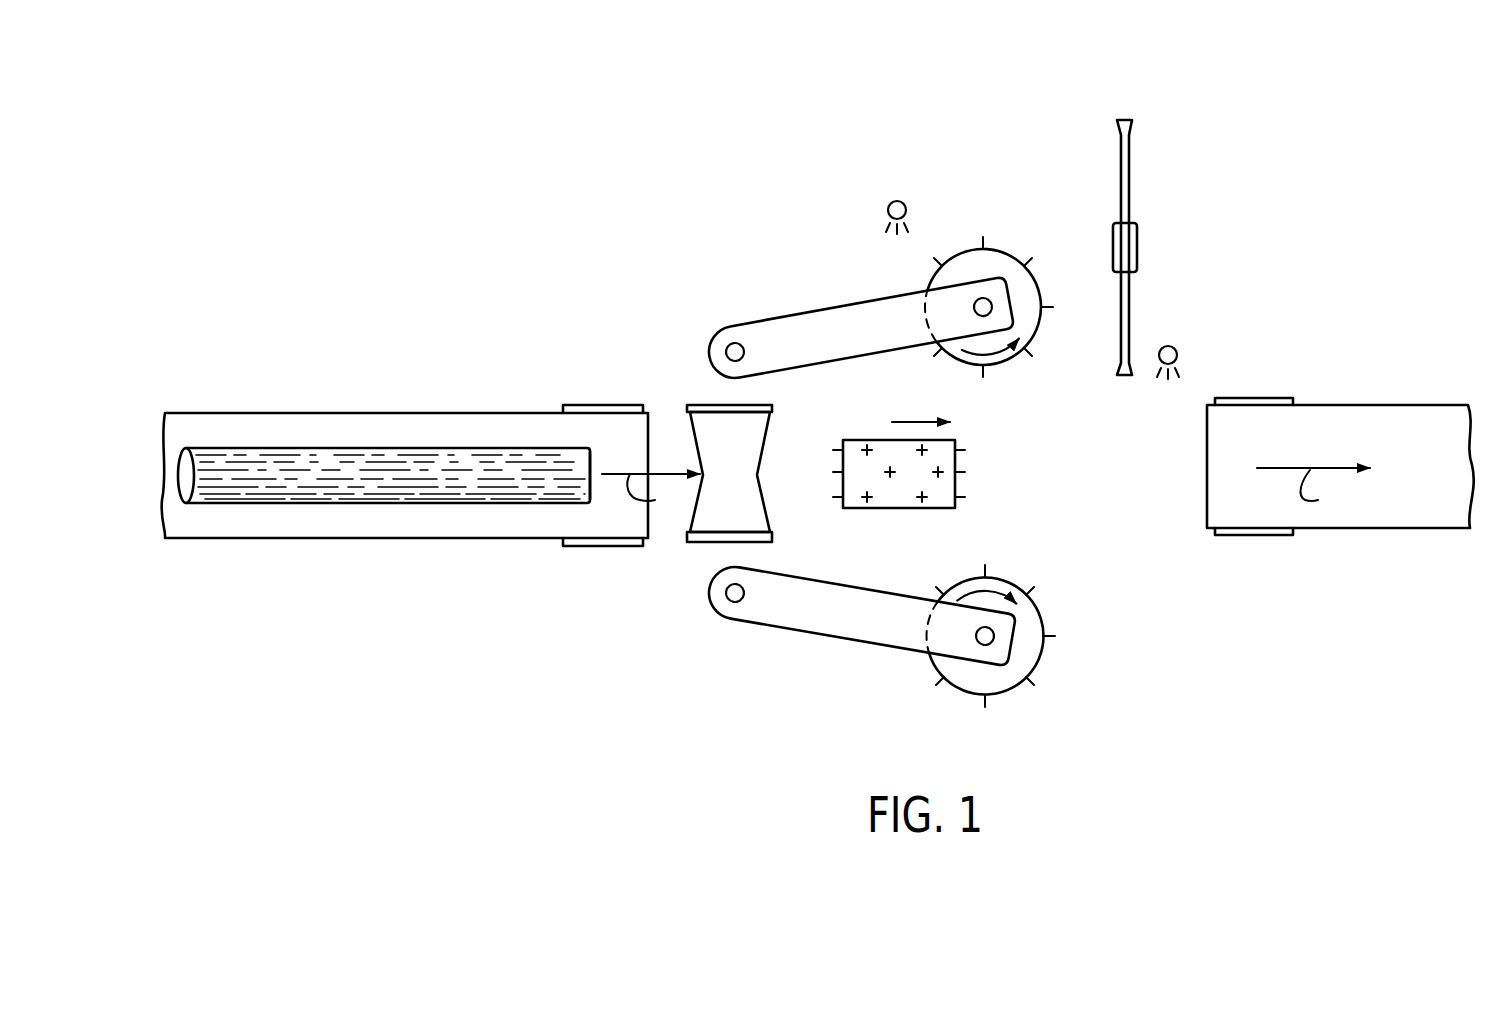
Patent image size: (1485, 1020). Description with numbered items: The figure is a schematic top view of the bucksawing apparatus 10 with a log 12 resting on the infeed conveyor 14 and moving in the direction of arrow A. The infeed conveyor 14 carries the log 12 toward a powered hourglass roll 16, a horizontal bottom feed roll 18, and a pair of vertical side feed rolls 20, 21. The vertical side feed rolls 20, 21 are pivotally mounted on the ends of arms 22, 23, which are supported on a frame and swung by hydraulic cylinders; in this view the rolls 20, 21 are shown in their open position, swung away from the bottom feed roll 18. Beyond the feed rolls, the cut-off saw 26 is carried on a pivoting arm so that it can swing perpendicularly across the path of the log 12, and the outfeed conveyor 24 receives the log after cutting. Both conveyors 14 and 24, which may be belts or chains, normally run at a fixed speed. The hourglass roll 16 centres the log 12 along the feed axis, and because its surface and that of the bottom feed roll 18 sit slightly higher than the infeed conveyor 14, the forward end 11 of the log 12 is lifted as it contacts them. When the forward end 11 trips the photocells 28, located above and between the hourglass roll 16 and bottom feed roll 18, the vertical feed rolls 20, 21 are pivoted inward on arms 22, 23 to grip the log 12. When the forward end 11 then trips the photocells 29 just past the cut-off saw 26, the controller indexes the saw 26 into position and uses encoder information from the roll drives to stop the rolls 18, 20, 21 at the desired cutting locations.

The bucksawing apparatus 10 is at (594, 190).
The forward end of log 11 is at (590, 466).
The log 12 is at (363, 447).
The infeed conveyor 14 is at (472, 412).
The powered hourglass roll 16 is at (697, 545).
The horizontal bottom feed roll 18 is at (905, 507).
The vertical side feed roll 20 is at (1005, 246).
The vertical side feed roll 21 is at (1047, 622).
The arm 22 is at (833, 323).
The arm 23 is at (850, 615).
The outfeed conveyor 24 is at (1348, 405).
The cut-off saw 26 is at (1130, 210).
The photocell 28 is at (892, 198).
The photocell 29 is at (1176, 343).